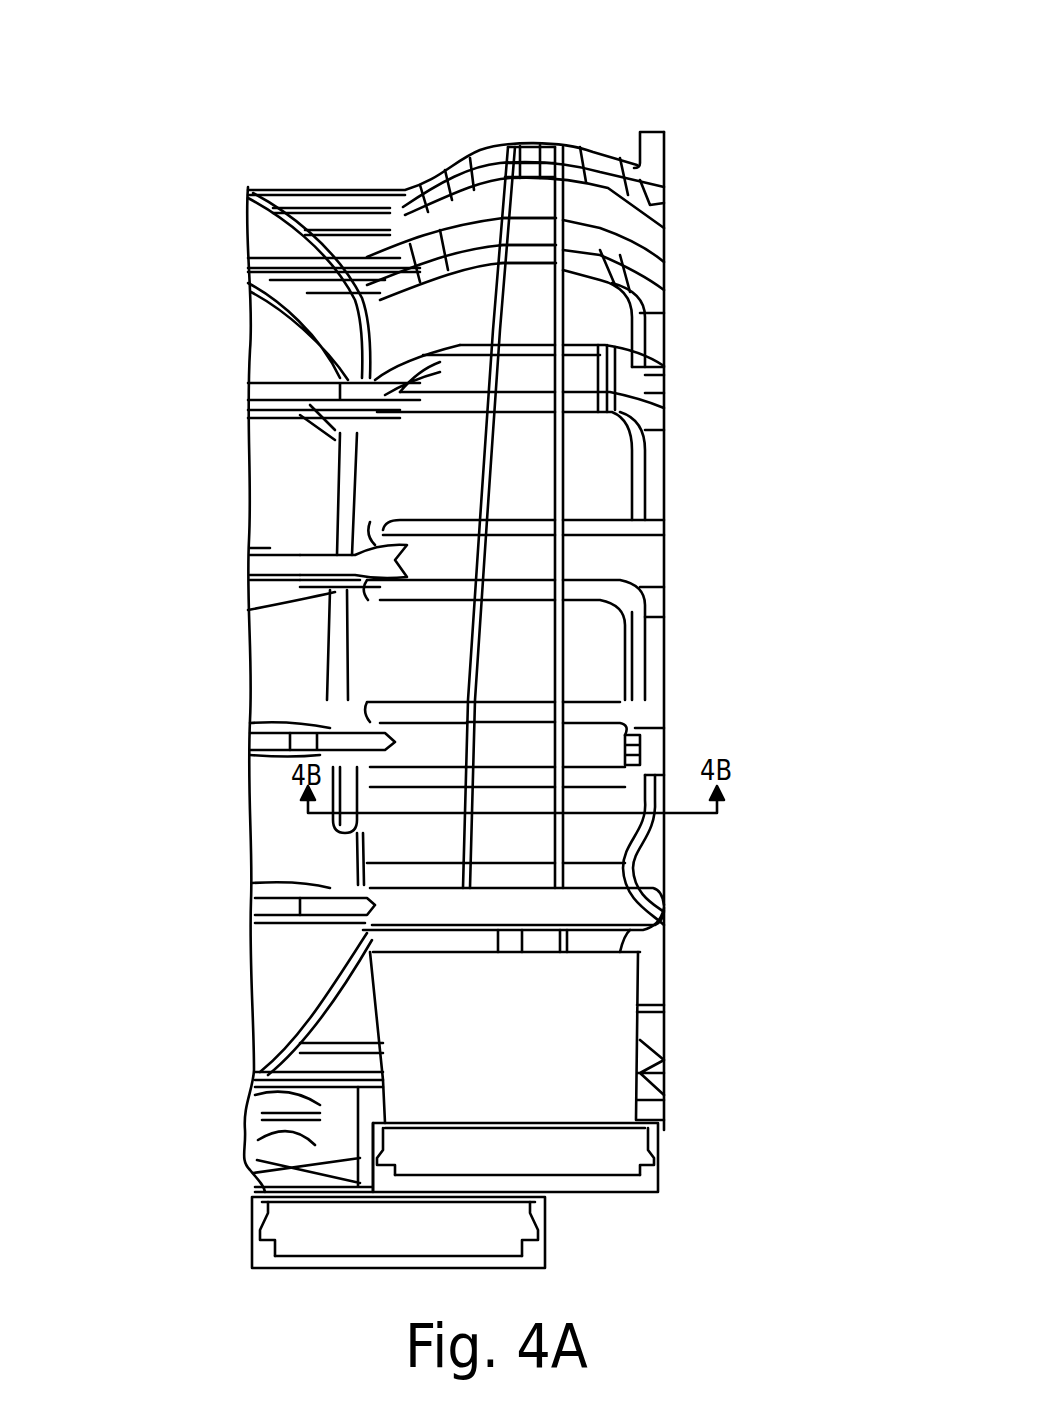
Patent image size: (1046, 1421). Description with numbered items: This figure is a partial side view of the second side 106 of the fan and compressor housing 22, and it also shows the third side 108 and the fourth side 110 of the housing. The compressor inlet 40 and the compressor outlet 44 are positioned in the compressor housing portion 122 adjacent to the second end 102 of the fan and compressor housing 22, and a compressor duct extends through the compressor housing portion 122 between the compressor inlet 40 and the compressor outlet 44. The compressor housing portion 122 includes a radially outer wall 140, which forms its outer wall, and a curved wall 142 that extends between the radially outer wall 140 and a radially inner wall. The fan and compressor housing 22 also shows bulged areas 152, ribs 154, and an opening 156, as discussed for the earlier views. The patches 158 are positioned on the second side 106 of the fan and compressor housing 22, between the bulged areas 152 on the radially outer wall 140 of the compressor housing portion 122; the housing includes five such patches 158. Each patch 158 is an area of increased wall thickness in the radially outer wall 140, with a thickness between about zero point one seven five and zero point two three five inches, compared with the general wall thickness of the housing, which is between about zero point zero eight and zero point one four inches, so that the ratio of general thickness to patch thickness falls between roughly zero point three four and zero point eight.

The fan and compressor housing 22 is at (233, 118).
The compressor inlet 40 is at (495, 1237).
The compressor outlet 44 is at (605, 1165).
The second end 102 is at (668, 468).
The second side 106 is at (600, 640).
The third side 108 is at (460, 150).
The fourth side 110 is at (348, 1090).
The compressor housing portion 122 is at (598, 110).
The radially outer wall 140 is at (600, 303).
The curved wall 142 is at (403, 487).
The bulged areas 152 is at (580, 560).
The ribs 154 is at (290, 568).
The opening 156 is at (335, 590).
The patches 158 is at (555, 207).